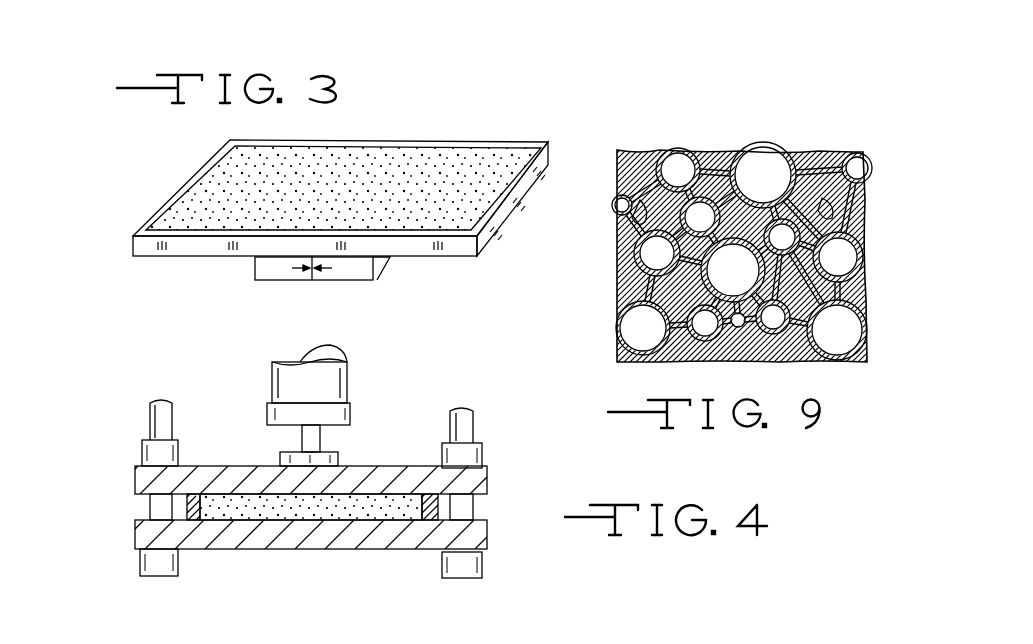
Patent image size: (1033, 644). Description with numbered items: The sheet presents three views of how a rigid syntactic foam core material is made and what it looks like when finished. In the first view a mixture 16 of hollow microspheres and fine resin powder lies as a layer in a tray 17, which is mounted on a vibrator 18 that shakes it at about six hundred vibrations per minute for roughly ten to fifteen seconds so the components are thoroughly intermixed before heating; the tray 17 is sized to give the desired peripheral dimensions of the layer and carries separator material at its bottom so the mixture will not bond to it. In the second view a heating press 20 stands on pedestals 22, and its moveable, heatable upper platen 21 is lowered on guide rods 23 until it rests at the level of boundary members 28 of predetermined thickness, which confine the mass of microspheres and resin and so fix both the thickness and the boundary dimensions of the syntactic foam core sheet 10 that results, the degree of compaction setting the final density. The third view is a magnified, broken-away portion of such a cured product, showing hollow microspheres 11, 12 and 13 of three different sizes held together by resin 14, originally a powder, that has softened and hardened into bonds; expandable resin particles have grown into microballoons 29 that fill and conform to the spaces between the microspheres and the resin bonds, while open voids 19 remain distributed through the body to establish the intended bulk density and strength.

In FIG. 4, the syntactic foam core sheet 10 is at (353, 500).
In FIG. 9, the hollow microspheres 11 is at (693, 145).
In FIG. 9, the hollow microspheres 12 is at (740, 177).
In FIG. 9, the hollow microspheres 13 is at (637, 211).
In FIG. 9, the resin 14 is at (863, 288).
In FIG. 3, the mixture 16 is at (402, 162).
In FIG. 3, the tray 17 is at (547, 167).
In FIG. 3, the vibrator 18 is at (362, 276).
In FIG. 9, the voids 19 is at (673, 252).
In FIG. 4, the heating press 20 is at (315, 546).
In FIG. 4, the upper platen 21 is at (208, 478).
In FIG. 4, the pedestals 22 is at (140, 563).
In FIG. 4, the guide rods 23 is at (477, 430).
In FIG. 4, the boundary members 28 is at (195, 522).
In FIG. 9, the microballoons 29 is at (648, 205).